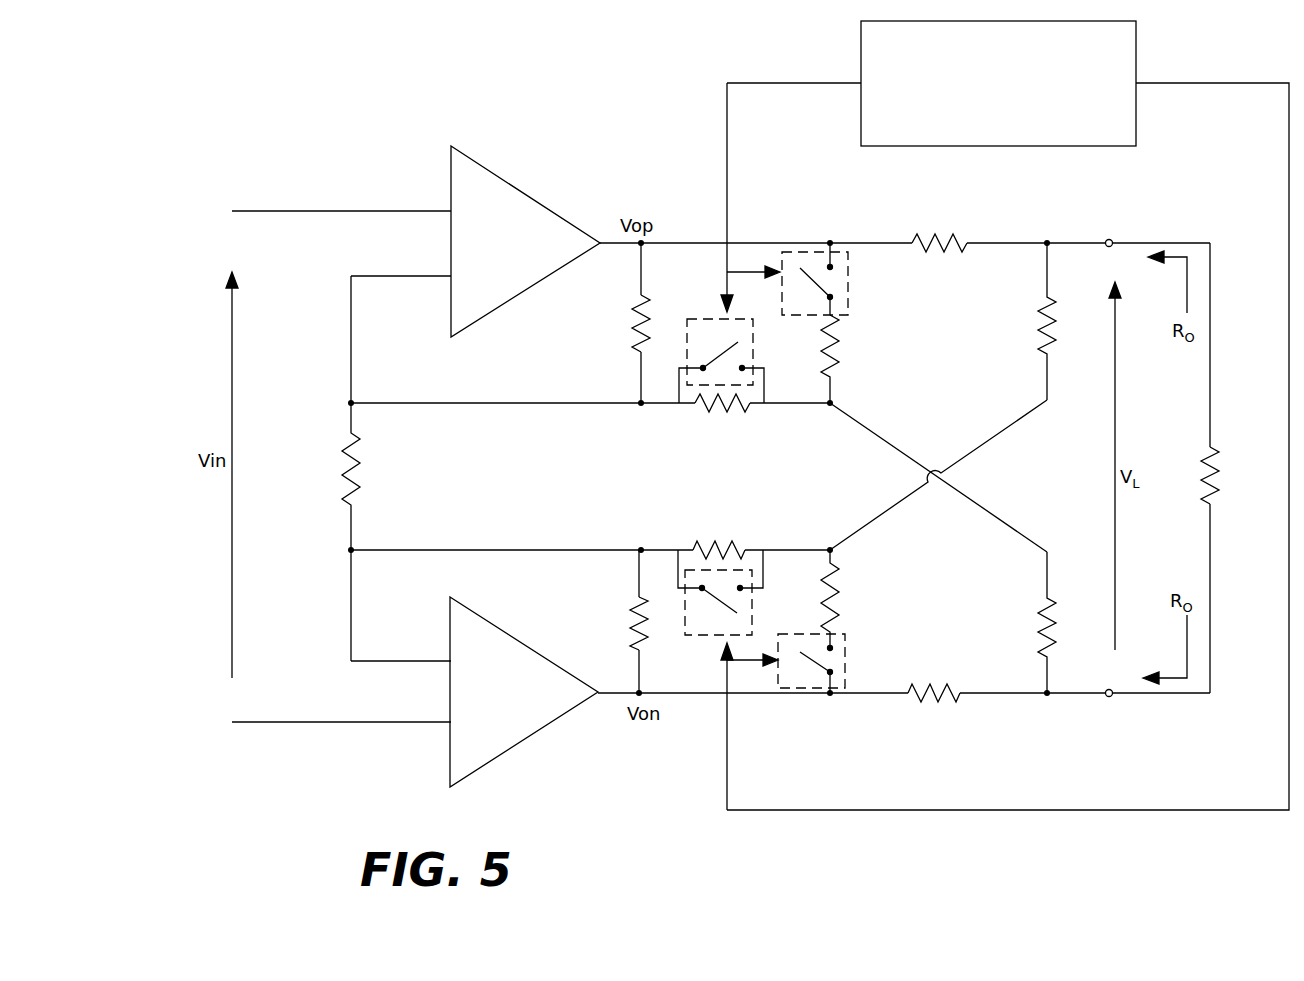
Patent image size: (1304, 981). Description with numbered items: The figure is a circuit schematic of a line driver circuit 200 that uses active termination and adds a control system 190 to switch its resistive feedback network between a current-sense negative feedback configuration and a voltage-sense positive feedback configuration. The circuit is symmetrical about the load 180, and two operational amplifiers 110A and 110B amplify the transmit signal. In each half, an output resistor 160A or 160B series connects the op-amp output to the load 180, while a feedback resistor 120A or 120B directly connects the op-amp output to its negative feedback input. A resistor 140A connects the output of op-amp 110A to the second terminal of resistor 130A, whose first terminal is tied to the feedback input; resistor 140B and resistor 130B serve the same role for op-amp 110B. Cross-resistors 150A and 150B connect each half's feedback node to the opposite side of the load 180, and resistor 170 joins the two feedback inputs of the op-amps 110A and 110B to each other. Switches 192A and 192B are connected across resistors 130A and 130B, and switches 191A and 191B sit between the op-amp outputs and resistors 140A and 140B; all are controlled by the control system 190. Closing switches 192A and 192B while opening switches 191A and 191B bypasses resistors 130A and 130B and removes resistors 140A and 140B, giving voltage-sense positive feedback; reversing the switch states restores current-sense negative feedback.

The line driver circuit 200 is at (384, 80).
The operational amplifier 110A is at (497, 176).
The operational amplifier 110B is at (560, 718).
The feedback resistor 120A is at (632, 348).
The feedback resistor 120B is at (628, 640).
The resistor RFB 130A is at (748, 407).
The resistor RFB 130B is at (745, 544).
The resistor R1 140A is at (834, 372).
The resistor R1 140B is at (862, 582).
The cross-resistor R2 150A is at (1052, 320).
The cross-resistor R2 150B is at (1038, 622).
The output resistor 160A is at (912, 243).
The output resistor 160B is at (952, 707).
The resistor RG 170 is at (360, 462).
The load 180 is at (1214, 495).
The control system 190 is at (927, 136).
The switch 191A is at (839, 279).
The switch 191B is at (841, 663).
The switch 192A is at (710, 310).
The switch 192B is at (708, 645).